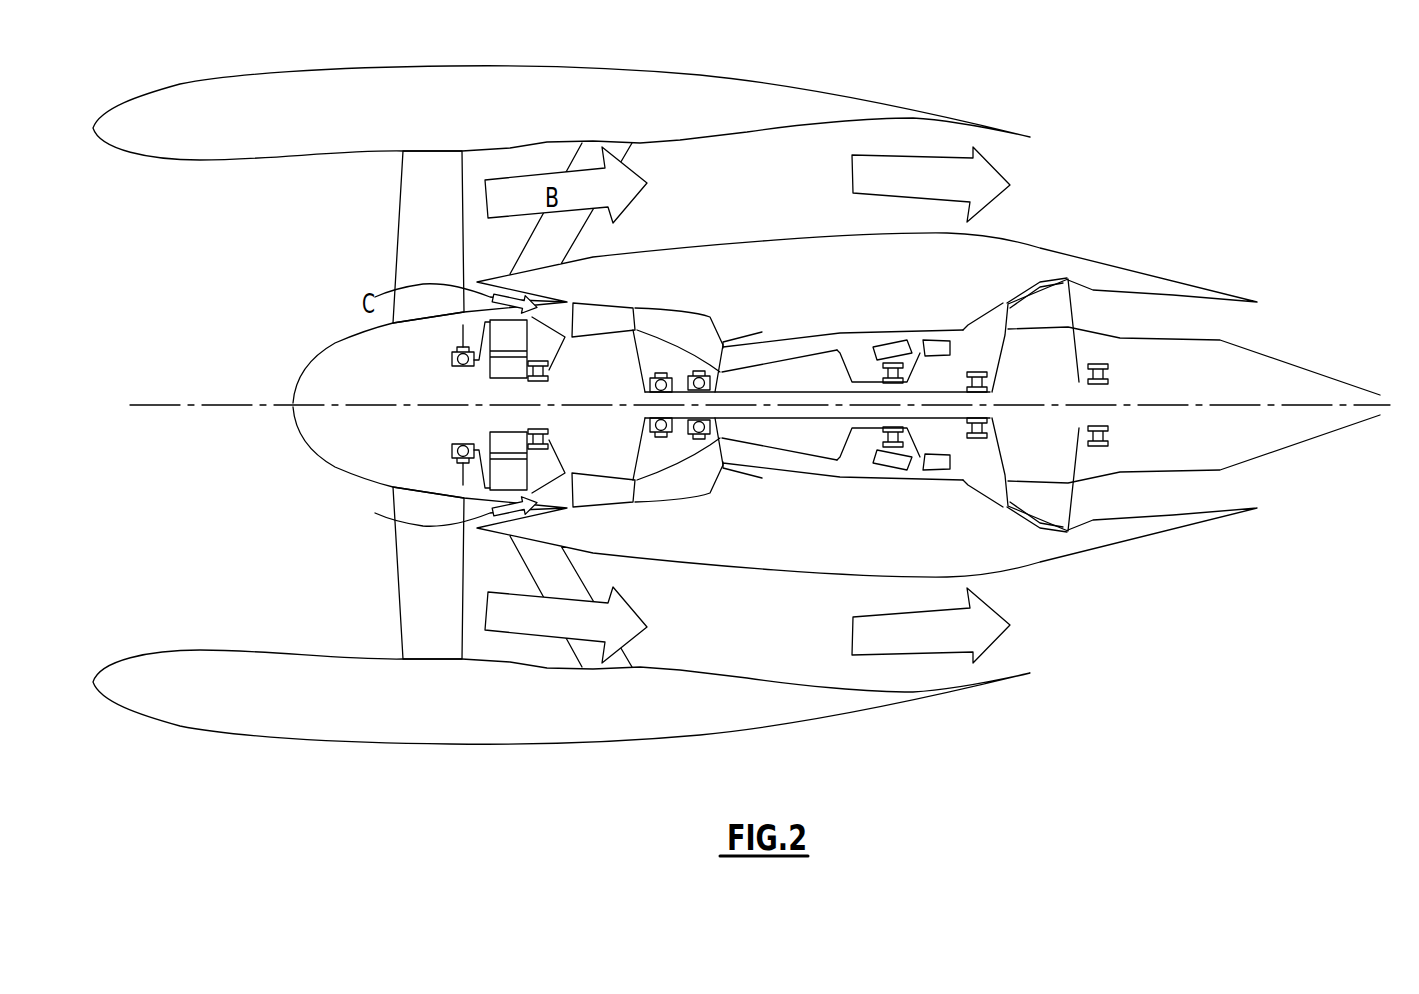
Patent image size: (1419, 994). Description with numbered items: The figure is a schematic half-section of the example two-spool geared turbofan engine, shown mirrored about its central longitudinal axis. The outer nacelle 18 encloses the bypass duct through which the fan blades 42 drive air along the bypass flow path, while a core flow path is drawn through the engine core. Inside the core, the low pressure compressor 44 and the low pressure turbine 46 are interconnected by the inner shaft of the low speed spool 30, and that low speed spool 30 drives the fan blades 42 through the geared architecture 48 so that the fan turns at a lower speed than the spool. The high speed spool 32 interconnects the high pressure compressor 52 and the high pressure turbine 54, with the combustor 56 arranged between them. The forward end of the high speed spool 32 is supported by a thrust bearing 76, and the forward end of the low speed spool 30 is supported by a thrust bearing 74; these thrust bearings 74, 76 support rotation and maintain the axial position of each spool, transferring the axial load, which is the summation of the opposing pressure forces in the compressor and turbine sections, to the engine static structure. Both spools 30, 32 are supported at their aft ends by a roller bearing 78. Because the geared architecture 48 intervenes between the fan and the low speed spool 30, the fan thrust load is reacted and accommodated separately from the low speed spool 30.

The nacelle 18 is at (307, 72).
The low speed spool 30 is at (762, 405).
The high speed spool 32 is at (820, 431).
The fan blades 42 is at (410, 210).
The low pressure compressor 44 is at (590, 312).
The low pressure turbine 46 is at (1072, 276).
The geared architecture 48 is at (490, 367).
The high pressure compressor 52 is at (744, 340).
The high pressure turbine 54 is at (938, 352).
The combustor 56 is at (890, 342).
The thrust bearing 74 is at (656, 352).
The thrust bearing 76 is at (698, 347).
The roller bearing 78 is at (984, 370).